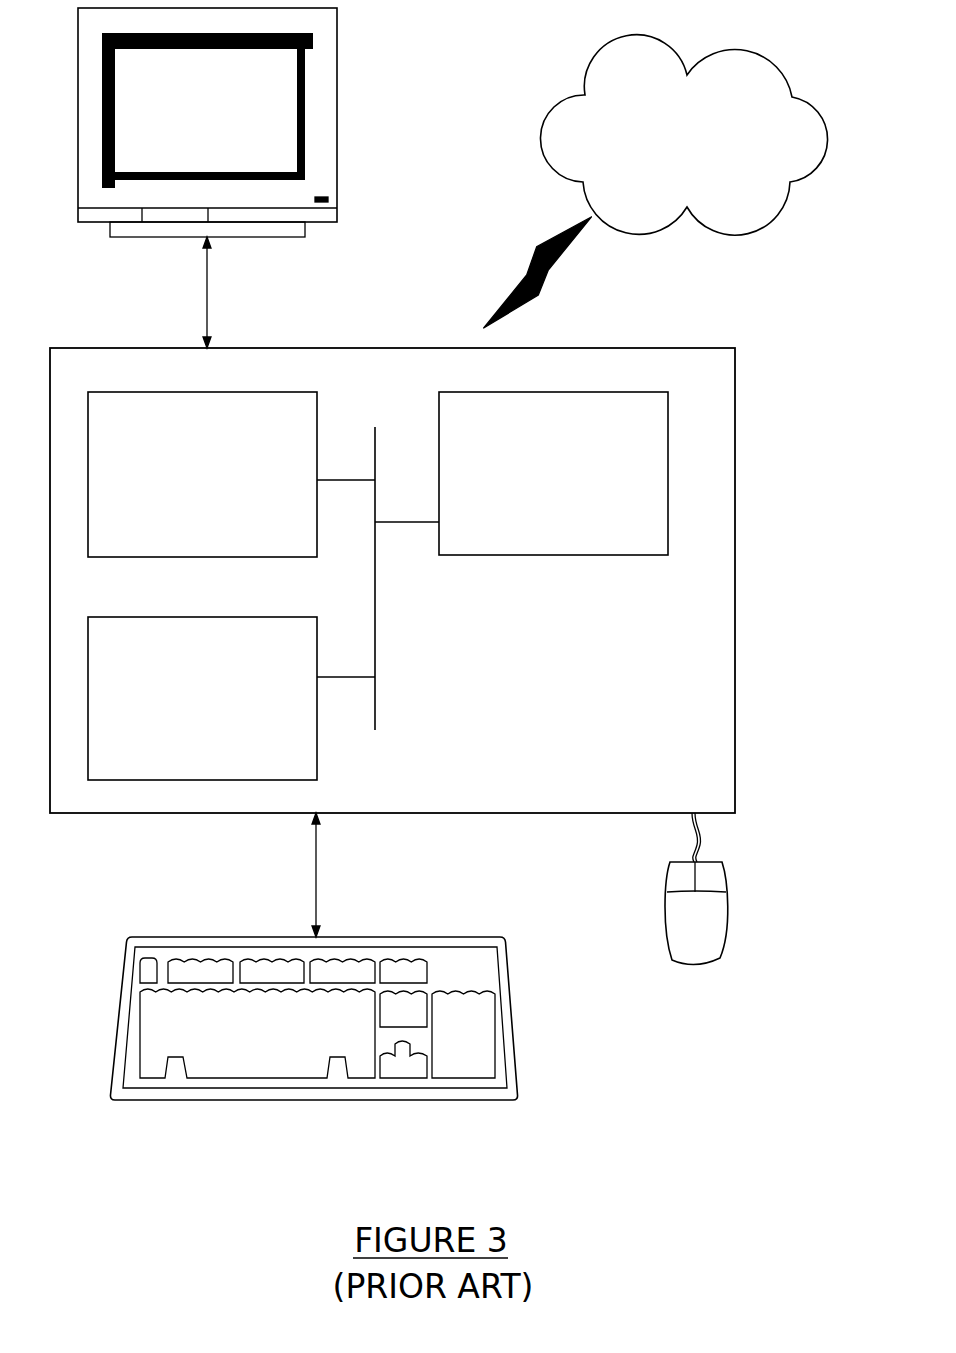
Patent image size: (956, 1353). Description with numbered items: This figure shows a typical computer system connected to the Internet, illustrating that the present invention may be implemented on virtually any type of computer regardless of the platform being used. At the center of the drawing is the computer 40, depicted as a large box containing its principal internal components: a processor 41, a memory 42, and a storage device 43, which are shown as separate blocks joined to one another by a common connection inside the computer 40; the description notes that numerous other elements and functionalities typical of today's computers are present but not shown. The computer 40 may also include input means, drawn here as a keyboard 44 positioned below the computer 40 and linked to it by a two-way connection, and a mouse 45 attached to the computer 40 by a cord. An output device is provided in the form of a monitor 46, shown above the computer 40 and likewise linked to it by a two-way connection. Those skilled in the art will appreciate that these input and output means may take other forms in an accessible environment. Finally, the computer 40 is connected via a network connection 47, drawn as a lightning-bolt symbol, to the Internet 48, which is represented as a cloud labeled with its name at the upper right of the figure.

The computer 40 is at (735, 575).
The processor 41 is at (536, 488).
The memory 42 is at (186, 488).
The storage device 43 is at (186, 712).
The keyboard 44 is at (233, 1044).
The mouse 45 is at (680, 938).
The monitor 46 is at (187, 136).
The network connection 47 is at (508, 250).
The Internet 48 is at (649, 53).